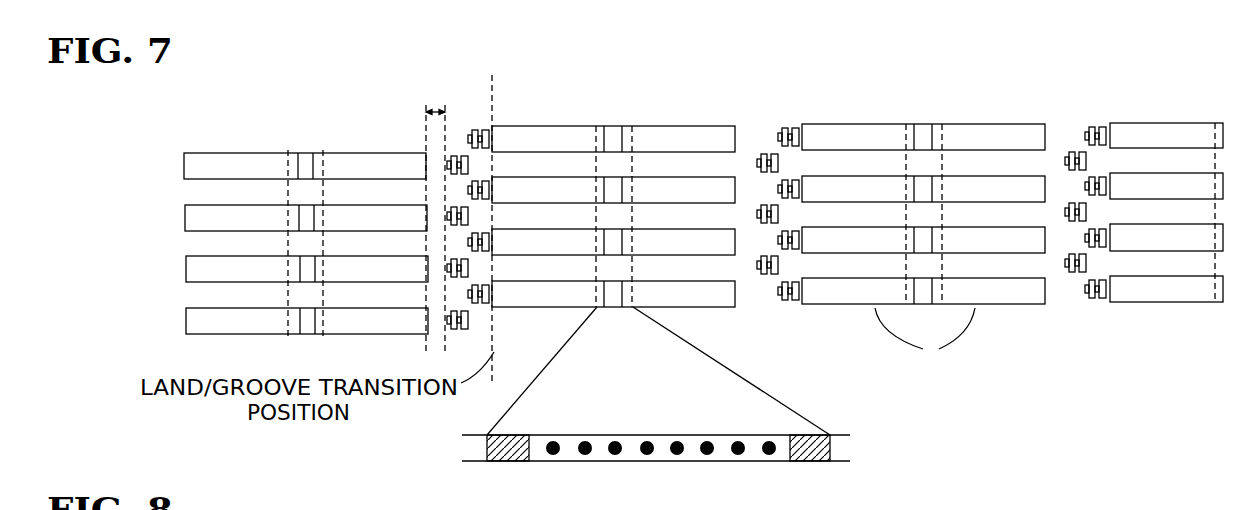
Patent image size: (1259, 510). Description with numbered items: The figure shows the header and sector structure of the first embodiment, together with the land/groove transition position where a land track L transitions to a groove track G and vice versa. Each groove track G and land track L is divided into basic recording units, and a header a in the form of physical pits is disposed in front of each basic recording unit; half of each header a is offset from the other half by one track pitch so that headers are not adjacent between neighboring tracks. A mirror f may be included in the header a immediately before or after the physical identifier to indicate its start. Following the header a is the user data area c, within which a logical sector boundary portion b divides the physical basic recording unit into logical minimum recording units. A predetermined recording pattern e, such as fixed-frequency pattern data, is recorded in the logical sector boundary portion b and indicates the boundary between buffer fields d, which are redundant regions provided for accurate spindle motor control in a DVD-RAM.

The header a is at (477, 108).
The logical sector boundary portion b is at (769, 200).
The user data area c is at (925, 339).
The buffer field d is at (658, 462).
The predetermined recording pattern e is at (647, 440).
The mirror f is at (1053, 133).
The groove track G is at (306, 243).
The land track L is at (206, 244).